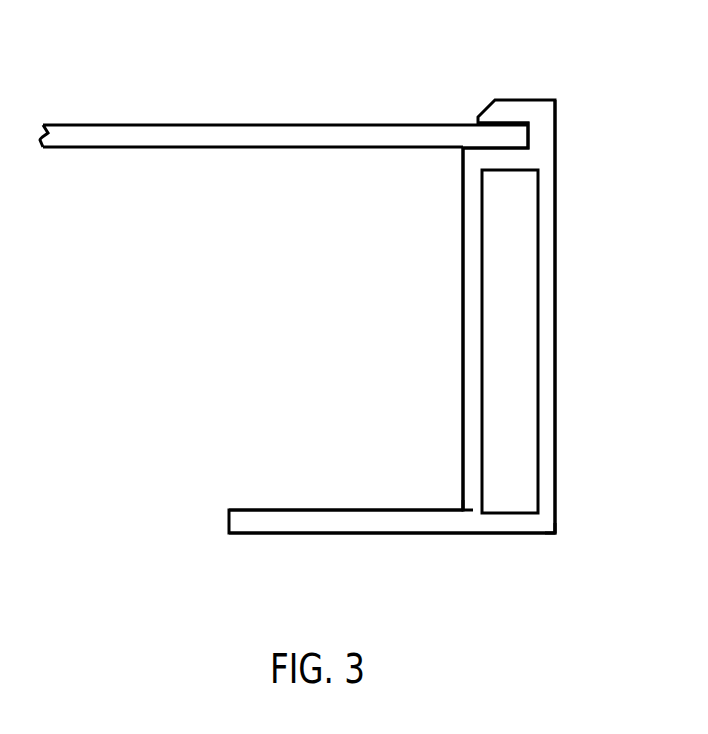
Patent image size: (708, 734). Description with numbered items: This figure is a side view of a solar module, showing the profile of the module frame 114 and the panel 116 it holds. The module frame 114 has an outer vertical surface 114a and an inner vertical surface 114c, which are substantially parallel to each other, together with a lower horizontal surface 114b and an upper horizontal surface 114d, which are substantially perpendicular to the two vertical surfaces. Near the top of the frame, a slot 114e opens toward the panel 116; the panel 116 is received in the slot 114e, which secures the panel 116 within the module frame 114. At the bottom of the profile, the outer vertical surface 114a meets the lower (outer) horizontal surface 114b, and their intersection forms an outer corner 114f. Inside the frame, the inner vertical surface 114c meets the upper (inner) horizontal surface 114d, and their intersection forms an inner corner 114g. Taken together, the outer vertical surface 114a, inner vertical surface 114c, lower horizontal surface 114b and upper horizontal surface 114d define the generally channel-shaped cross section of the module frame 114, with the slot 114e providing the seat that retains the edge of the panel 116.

The module frame 114 is at (302, 40).
The panel 116 is at (158, 124).
The outer vertical surface 114a is at (557, 262).
The lower horizontal surface 114b is at (318, 533).
The inner vertical surface 114c is at (462, 264).
The upper horizontal surface 114d is at (318, 510).
The slot 114e is at (456, 146).
The outer corner 114f is at (555, 533).
The inner corner 114g is at (460, 508).